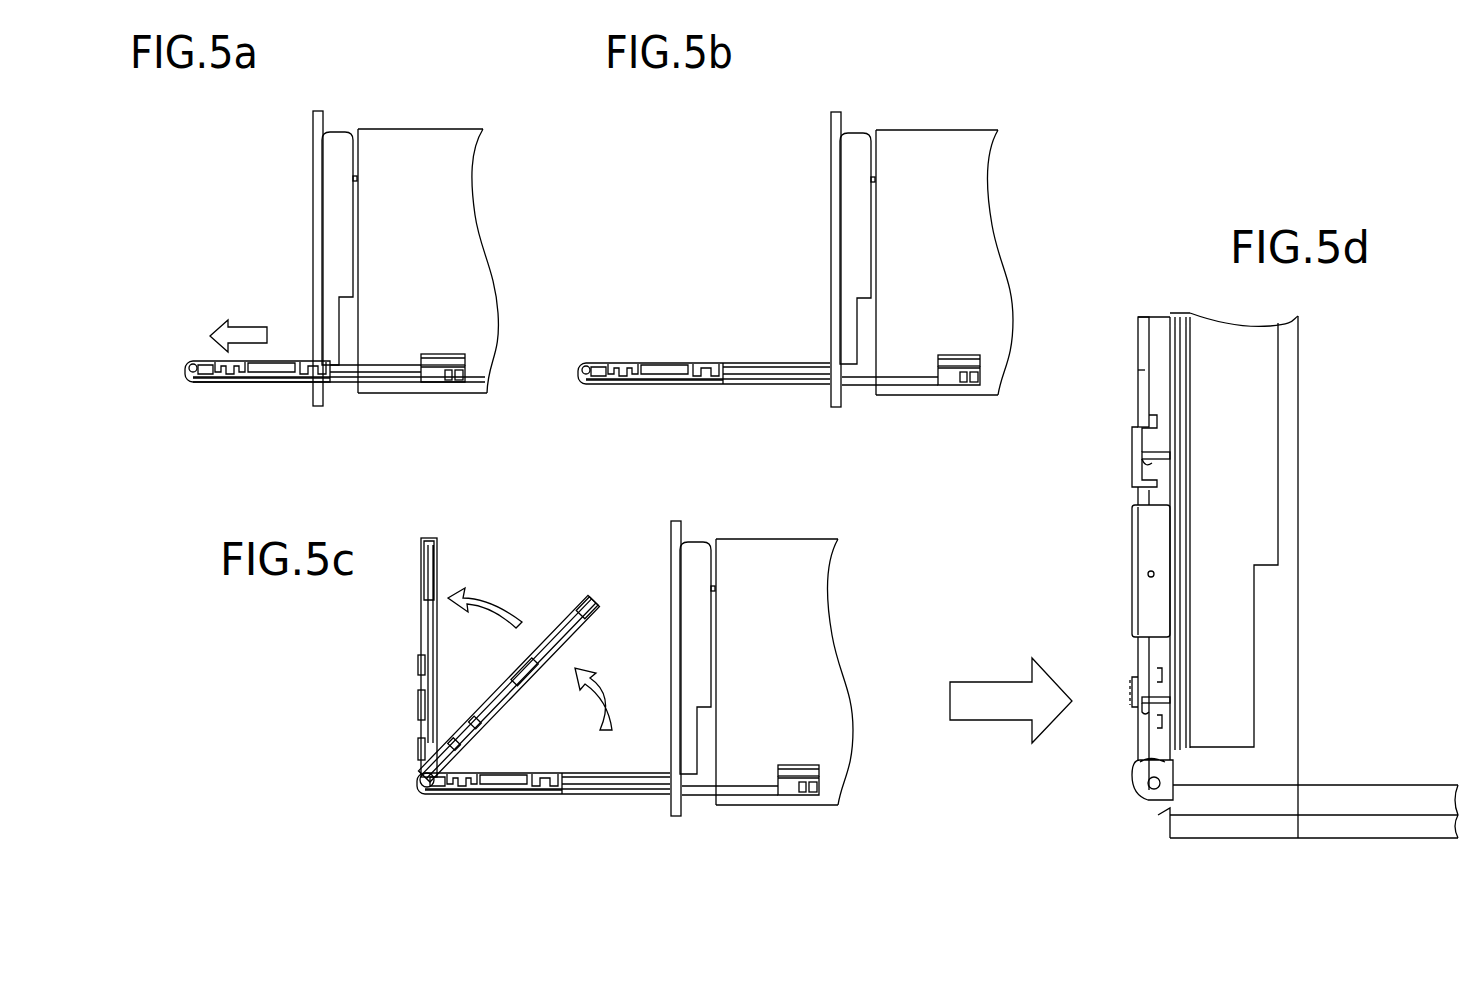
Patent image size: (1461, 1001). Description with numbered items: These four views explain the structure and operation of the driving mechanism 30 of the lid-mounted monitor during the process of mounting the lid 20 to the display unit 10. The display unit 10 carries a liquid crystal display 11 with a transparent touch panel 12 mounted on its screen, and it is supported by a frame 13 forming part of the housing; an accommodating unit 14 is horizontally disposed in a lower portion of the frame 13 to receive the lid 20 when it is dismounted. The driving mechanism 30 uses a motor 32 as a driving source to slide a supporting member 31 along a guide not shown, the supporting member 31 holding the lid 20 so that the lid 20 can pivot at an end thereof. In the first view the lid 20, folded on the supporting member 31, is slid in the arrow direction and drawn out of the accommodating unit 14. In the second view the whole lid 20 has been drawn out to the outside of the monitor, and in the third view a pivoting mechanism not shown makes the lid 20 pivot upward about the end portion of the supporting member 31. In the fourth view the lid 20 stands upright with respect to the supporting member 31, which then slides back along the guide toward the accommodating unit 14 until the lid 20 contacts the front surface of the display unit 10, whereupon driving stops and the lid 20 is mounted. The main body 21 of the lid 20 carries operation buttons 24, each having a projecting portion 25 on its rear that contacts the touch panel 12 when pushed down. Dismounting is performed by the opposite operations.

In FIG. 5A, the display unit 10 is at (340, 133).
In FIG. 5B, the display unit 10 is at (858, 134).
In FIG. 5C, the display unit 10 is at (698, 544).
In FIG. 5D, the display unit 10 is at (1245, 751).
In FIG. 5D, the liquid crystal display 11 is at (1213, 750).
In FIG. 5D, the touch panel 12 is at (1175, 757).
In FIG. 5A, the frame 13 is at (313, 121).
In FIG. 5B, the frame 13 is at (831, 122).
In FIG. 5C, the frame 13 is at (671, 531).
In FIG. 5A, the accommodating unit 14 is at (343, 395).
In FIG. 5B, the accommodating unit 14 is at (861, 396).
In FIG. 5C, the accommodating unit 14 is at (701, 806).
In FIG. 5D, the accommodating unit 14 is at (1166, 814).
In FIG. 5A, the lid 20 is at (290, 360).
In FIG. 5B, the lid 20 is at (757, 364).
In FIG. 5C, the lid 20 is at (572, 628).
In FIG. 5D, the lid 20 is at (1130, 582).
In FIG. 5D, the main body 21 is at (1138, 396).
In FIG. 5D, the operation button 24 is at (1134, 442).
In FIG. 5D, the projecting portion 25 is at (1142, 470).
In FIG. 5A, the driving mechanism 30 is at (452, 395).
In FIG. 5B, the driving mechanism 30 is at (967, 396).
In FIG. 5C, the driving mechanism 30 is at (807, 806).
In FIG. 5A, the supporting member 31 is at (398, 385).
In FIG. 5B, the supporting member 31 is at (780, 387).
In FIG. 5C, the supporting member 31 is at (620, 797).
In FIG. 5D, the supporting member 31 is at (1358, 805).
In FIG. 5A, the motor 32 is at (455, 362).
In FIG. 5B, the motor 32 is at (975, 364).
In FIG. 5C, the motor 32 is at (815, 774).